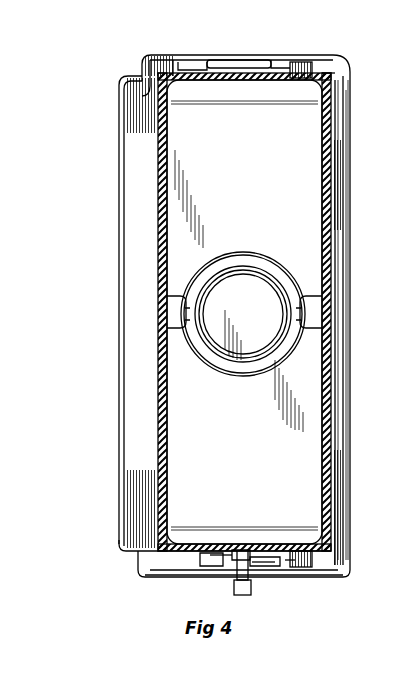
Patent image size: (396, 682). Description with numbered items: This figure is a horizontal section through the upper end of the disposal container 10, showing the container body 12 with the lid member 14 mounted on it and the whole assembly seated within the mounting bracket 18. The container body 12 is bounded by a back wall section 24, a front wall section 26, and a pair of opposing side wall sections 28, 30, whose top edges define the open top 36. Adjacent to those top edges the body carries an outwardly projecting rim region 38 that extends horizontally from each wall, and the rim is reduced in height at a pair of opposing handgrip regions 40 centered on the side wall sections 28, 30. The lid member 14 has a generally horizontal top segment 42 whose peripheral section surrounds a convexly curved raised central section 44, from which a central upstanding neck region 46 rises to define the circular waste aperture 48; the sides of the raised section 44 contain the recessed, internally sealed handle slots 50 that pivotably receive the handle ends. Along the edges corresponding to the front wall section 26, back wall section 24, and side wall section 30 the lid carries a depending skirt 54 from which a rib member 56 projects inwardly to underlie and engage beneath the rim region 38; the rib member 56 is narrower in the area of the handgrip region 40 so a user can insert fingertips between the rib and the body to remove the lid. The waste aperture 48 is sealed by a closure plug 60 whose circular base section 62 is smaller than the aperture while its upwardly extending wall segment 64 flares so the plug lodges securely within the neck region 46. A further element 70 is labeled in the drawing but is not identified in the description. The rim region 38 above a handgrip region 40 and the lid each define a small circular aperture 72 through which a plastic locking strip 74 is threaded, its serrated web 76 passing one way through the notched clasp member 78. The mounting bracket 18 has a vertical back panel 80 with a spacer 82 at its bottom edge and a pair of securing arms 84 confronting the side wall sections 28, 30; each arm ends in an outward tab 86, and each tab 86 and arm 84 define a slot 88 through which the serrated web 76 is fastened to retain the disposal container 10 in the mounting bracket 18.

The disposal container 10 is at (392, 146).
The container body 12 is at (337, 70).
The lid member 14 is at (160, 58).
The mounting bracket 18 is at (130, 62).
The back wall section 24 is at (160, 526).
The front wall section 26 is at (330, 394).
The side wall section 28 is at (293, 552).
The side wall section 30 is at (310, 74).
The open top 36 is at (367, 320).
The rim region 38 is at (305, 72).
The handgrip region 40 is at (220, 585).
The top segment 42 is at (252, 91).
The raised central section 44 is at (252, 184).
The neck region 46 is at (182, 350).
The waste aperture 48 is at (278, 304).
The handle slots 50 is at (166, 300).
The depending skirt 54 is at (330, 238).
The rib member 56 is at (152, 92).
The closure plug 60 is at (292, 282).
The base section 62 is at (262, 306).
The wall segment 64 is at (290, 324).
The spacer 70 is at (369, 320).
The circular aperture 72 is at (234, 560).
The locking strip 74 is at (258, 556).
The serrated web 76 is at (256, 568).
The notched clasp member 78 is at (236, 580).
The back panel 80 is at (118, 152).
The spacer 82 is at (152, 100).
The securing arms 84 is at (165, 60).
The tab 86 is at (197, 66).
The slot 88 is at (236, 64).